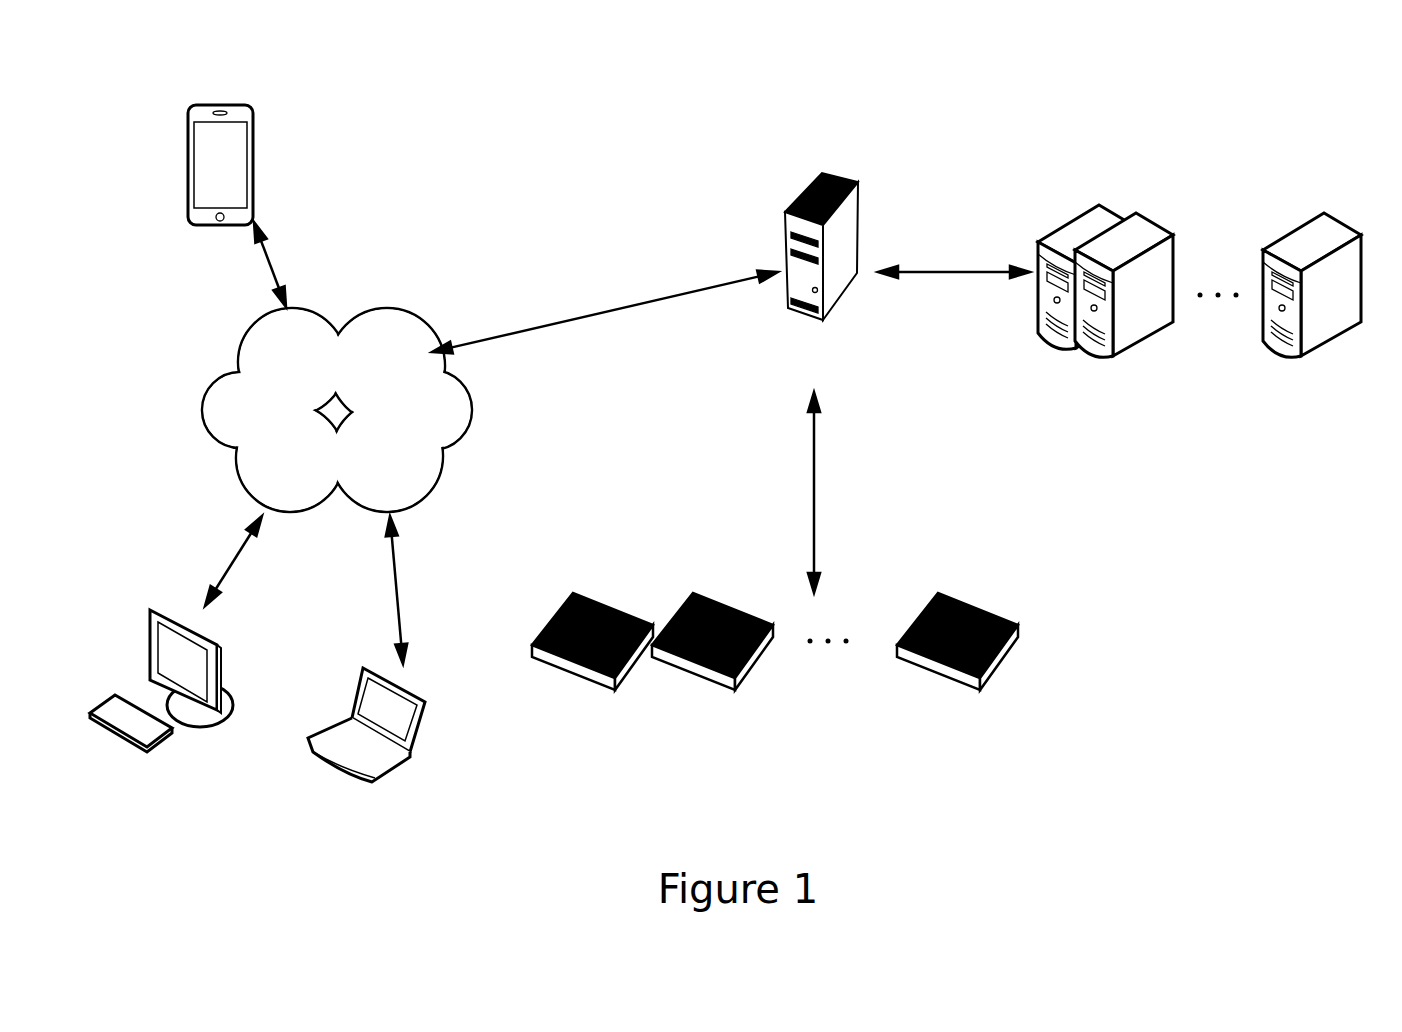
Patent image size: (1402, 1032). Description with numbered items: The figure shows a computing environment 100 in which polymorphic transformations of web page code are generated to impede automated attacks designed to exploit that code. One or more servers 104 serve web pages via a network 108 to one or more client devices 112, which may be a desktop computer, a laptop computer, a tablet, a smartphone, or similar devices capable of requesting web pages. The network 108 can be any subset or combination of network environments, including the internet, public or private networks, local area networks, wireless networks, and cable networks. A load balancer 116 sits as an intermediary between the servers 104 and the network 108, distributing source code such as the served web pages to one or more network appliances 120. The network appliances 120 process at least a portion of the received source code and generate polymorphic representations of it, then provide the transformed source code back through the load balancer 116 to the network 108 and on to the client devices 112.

The computing environment 100 is at (743, 412).
The servers 104 is at (1158, 307).
The network 108 is at (337, 410).
The client devices 112 is at (255, 426).
The load balancer 116 is at (787, 265).
The network appliances 120 is at (760, 667).